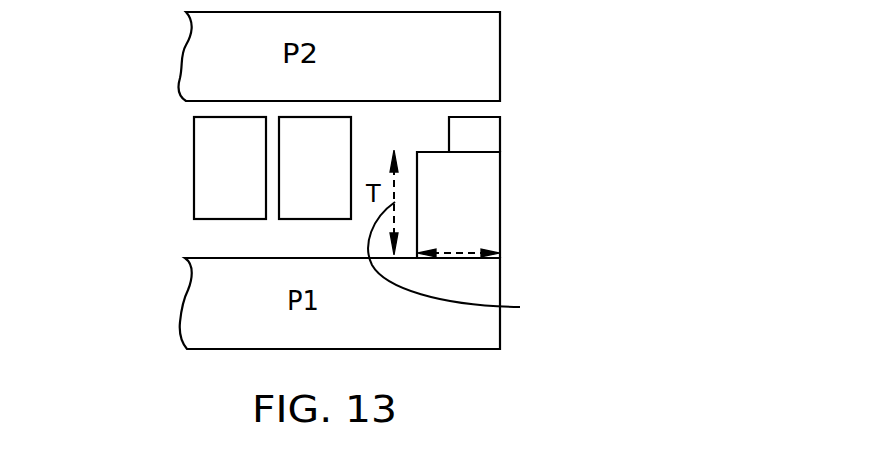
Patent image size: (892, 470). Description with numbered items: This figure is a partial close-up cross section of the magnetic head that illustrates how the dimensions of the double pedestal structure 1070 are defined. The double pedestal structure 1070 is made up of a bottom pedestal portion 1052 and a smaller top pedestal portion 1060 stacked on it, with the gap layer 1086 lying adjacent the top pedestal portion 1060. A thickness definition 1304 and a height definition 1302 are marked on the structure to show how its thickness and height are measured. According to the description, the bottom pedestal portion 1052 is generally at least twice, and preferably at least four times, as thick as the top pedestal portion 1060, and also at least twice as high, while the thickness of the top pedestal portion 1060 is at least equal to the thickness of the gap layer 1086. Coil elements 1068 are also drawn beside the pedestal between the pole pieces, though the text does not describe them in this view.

The coil 1068 is at (178, 127).
The gap layer 1086 is at (516, 104).
The top pedestal portion 1060 is at (495, 130).
The bottom pedestal portion 1052 is at (515, 205).
The double pedestal structure 1070 is at (567, 171).
The height definition 1302 is at (461, 254).
The thickness definition 1304 is at (520, 307).